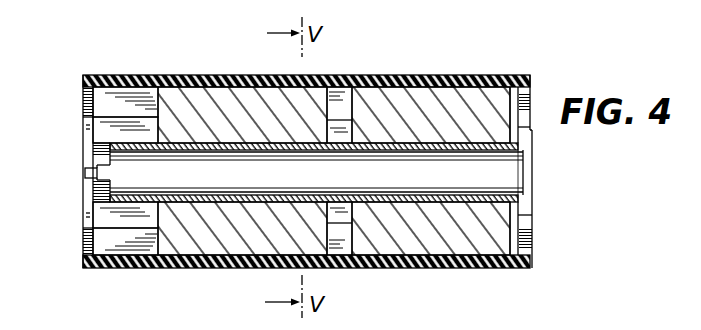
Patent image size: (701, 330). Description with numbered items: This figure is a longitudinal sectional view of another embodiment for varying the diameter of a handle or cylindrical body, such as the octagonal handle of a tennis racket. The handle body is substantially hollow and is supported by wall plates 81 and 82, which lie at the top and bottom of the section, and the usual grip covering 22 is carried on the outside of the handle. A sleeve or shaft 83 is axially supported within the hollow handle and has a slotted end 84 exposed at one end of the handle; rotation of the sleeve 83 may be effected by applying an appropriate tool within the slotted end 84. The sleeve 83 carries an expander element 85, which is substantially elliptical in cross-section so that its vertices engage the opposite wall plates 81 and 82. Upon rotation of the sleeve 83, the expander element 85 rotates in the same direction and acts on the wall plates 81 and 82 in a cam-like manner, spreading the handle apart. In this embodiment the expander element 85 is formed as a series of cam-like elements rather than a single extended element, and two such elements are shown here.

The grip covering 22 is at (450, 268).
The wall plate 81 is at (88, 99).
The wall plate 82 is at (99, 251).
The sleeve 83 is at (96, 156).
The slotted end 84 is at (85, 173).
The expander element 85 is at (217, 100).